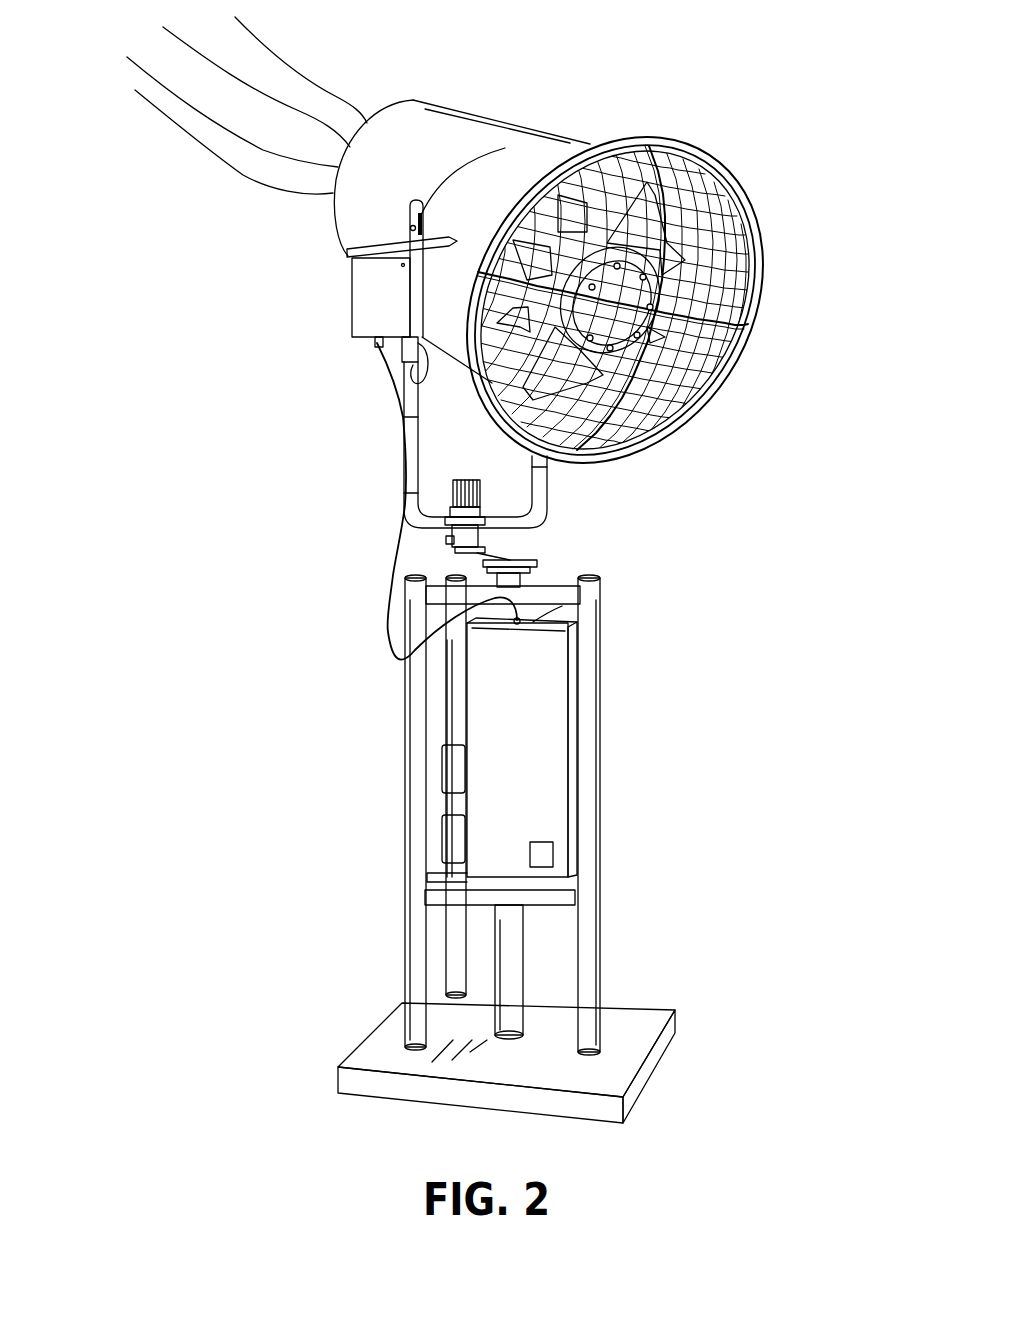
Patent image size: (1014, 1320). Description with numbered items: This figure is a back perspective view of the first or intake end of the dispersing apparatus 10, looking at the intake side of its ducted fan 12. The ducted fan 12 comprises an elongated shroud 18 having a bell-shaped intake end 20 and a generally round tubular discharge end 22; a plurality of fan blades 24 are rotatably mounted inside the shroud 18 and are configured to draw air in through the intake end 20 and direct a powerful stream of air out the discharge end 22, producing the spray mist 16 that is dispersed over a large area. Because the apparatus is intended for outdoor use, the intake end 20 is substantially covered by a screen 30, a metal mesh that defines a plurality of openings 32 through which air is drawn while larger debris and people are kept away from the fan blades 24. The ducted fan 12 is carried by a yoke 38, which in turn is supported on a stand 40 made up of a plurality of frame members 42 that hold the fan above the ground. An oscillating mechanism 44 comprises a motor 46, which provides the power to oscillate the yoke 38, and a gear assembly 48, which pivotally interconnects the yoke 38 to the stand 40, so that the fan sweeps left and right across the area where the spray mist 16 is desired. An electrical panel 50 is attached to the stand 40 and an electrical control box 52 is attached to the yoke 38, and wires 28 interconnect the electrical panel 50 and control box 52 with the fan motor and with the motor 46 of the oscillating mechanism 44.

The dispersing apparatus 10 is at (162, 430).
The ducted fan 12 is at (468, 102).
The spray mist 16 is at (238, 125).
The shroud 18 is at (503, 150).
The intake end 20 is at (750, 178).
The discharge end 22 is at (314, 236).
The fan blades 24 is at (655, 180).
The wires 28 is at (383, 652).
The screen 30 is at (708, 366).
The openings 32 is at (708, 262).
The yoke 38 is at (545, 483).
The stand 40 is at (512, 849).
The frame members 42 is at (417, 797).
The oscillating mechanism 44 is at (428, 553).
The motor 46 is at (460, 495).
The gear assembly 48 is at (537, 567).
The electrical panel 50 is at (548, 763).
The electrical control box 52 is at (375, 280).